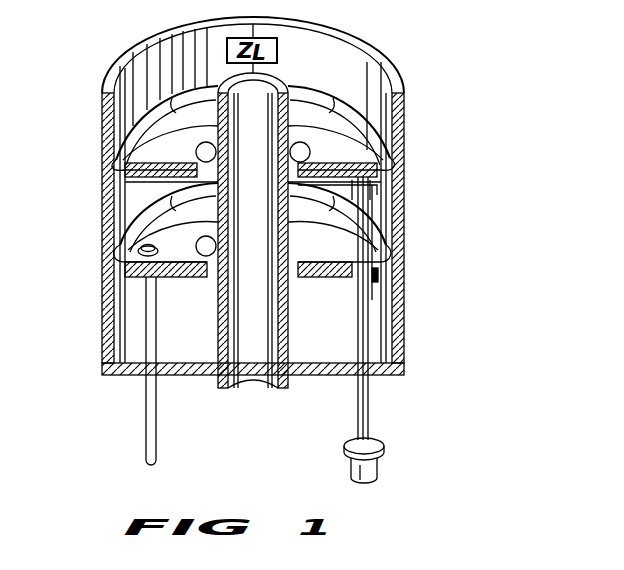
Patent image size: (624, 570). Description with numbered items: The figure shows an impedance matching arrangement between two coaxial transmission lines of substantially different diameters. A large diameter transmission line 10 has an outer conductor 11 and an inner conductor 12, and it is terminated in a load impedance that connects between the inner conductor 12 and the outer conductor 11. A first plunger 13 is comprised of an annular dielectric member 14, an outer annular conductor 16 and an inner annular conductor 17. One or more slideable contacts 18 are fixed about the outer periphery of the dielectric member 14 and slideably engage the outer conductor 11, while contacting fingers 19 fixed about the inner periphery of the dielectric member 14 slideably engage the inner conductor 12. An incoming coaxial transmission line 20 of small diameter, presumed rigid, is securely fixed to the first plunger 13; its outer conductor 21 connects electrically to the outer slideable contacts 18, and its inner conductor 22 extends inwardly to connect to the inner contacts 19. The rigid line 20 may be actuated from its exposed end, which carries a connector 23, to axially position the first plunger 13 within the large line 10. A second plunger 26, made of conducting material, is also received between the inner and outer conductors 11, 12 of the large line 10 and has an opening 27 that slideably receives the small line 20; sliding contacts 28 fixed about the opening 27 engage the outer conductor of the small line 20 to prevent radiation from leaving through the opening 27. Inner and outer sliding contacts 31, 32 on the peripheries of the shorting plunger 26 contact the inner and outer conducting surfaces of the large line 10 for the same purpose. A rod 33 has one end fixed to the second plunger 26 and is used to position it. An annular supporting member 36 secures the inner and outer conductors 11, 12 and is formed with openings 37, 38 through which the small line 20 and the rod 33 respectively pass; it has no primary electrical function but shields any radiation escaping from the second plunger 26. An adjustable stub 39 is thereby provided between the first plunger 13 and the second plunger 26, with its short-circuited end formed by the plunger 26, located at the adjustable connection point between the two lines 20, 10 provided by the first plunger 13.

The large diameter transmission line 10 is at (250, 217).
The outer conductor 11 is at (103, 183).
The inner conductor 12 is at (218, 334).
The first plunger 13 is at (393, 152).
The annular dielectric member 14 is at (135, 156).
The outer annular conductor 16 is at (127, 172).
The inner annular conductor 17 is at (204, 158).
The slideable contacts 18 is at (122, 140).
The contacting fingers 19 is at (299, 136).
The incoming coaxial transmission line 20 is at (369, 414).
The outer conductor 21 is at (385, 178).
The inner conductor 22 is at (380, 198).
The connector 23 is at (379, 453).
The second plunger 26 is at (339, 286).
The opening 27 is at (385, 248).
The sliding contacts 28 is at (385, 292).
The inner sliding contacts 31 is at (215, 238).
The outer sliding contacts 32 is at (394, 229).
The rod 33 is at (157, 425).
The annular supporting member 36 is at (350, 376).
The opening 37 is at (358, 366).
The opening 38 is at (156, 358).
The adjustable stub 39 is at (101, 222).